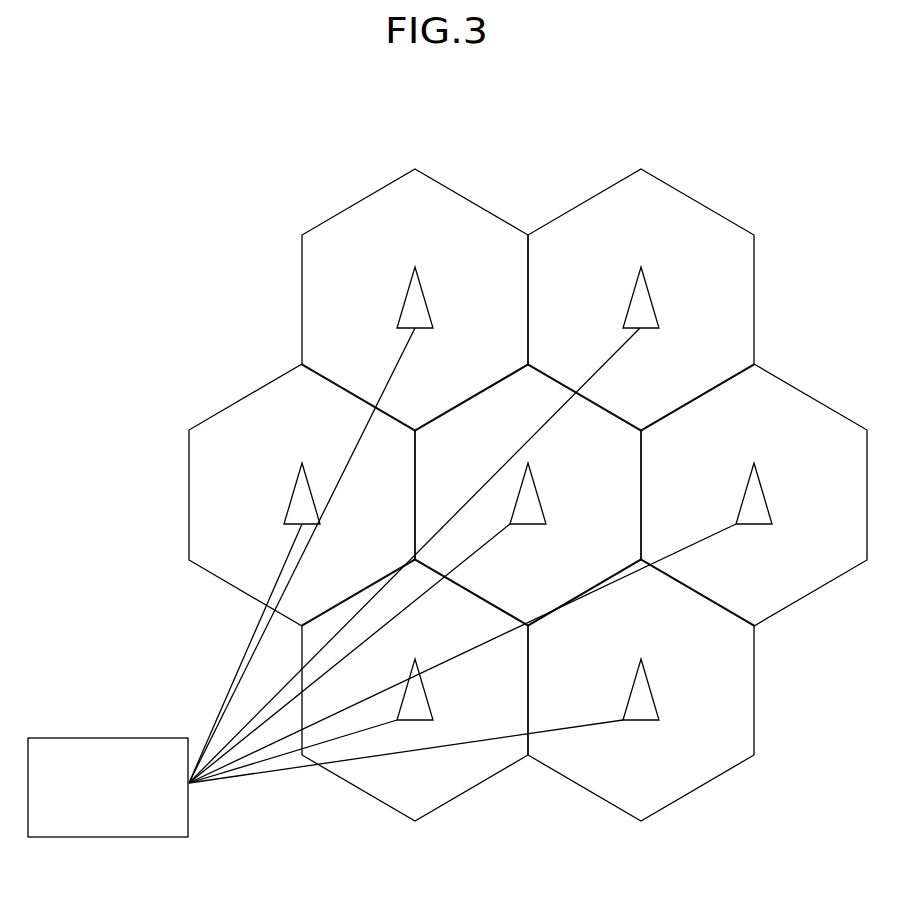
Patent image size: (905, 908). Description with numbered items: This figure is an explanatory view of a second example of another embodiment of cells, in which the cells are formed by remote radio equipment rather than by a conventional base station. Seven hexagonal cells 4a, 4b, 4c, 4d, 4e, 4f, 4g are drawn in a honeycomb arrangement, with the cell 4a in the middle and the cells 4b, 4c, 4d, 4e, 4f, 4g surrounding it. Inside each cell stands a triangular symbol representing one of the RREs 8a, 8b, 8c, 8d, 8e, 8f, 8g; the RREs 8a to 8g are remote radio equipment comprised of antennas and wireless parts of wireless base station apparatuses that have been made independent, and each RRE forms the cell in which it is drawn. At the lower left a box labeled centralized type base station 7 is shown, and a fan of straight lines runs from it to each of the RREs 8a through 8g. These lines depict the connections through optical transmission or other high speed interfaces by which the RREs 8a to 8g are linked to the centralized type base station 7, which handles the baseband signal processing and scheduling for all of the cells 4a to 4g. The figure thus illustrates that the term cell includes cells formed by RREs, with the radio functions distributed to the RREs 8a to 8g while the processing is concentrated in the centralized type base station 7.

The cell 4a is at (459, 464).
The cell 4b is at (341, 266).
The cell 4c is at (566, 266).
The cell 4d is at (678, 464).
The cell 4e is at (656, 807).
The cell 4f is at (428, 807).
The cell 4g is at (235, 459).
The RRE 8a is at (538, 485).
The RRE 8b is at (405, 293).
The RRE 8c is at (635, 290).
The RRE 8d is at (746, 490).
The RRE 8e is at (655, 690).
The RRE 8f is at (432, 702).
The RRE 8g is at (297, 485).
The centralized type base station 7 is at (95, 738).